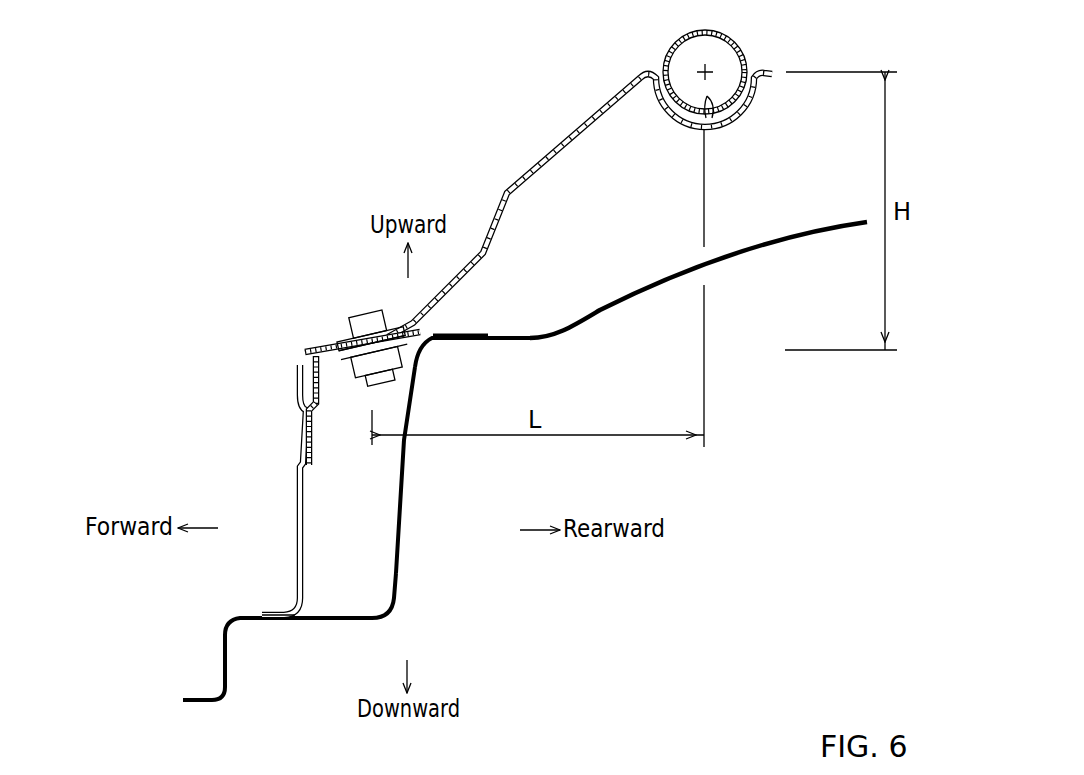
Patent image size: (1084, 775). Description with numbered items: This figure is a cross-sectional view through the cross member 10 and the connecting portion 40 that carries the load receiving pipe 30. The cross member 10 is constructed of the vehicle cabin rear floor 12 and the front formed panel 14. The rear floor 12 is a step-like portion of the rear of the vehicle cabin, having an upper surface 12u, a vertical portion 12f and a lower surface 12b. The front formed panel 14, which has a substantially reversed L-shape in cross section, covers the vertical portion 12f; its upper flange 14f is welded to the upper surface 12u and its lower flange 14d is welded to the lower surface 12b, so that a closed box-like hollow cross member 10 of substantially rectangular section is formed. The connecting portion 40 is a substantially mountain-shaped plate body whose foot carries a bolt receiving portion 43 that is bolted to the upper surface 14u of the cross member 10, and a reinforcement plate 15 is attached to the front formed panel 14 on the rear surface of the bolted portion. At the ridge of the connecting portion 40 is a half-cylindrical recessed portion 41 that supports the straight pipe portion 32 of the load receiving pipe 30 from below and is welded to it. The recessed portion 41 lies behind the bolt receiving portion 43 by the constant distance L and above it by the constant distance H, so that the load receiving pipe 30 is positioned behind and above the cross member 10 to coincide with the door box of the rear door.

The cross member 10 is at (525, 461).
The vehicle cabin rear floor 12 is at (522, 335).
The upper surface of the vehicle cabin rear floor 12u is at (632, 292).
The vertical portion of the vehicle cabin rear floor 12f is at (405, 518).
The lower surface of the vehicle cabin rear floor 12b is at (348, 618).
The front formed panel 14 is at (297, 512).
The upper surface of the cross member 14u is at (320, 357).
The upper flange 14f is at (452, 334).
The lower flange 14d is at (282, 610).
The reinforcement plate 15 is at (312, 444).
The load receiving pipe 30 is at (756, 52).
The straight pipe portion 32 is at (687, 65).
The connecting portion 40 is at (544, 158).
The recessed portion 41 is at (715, 107).
The bolt receiving portion 43 is at (332, 346).